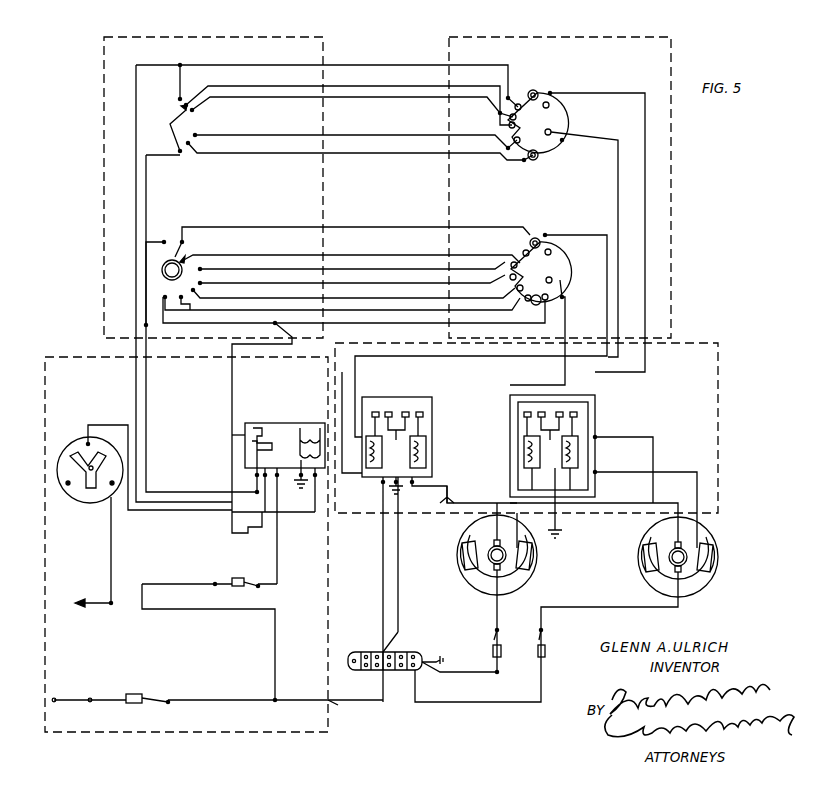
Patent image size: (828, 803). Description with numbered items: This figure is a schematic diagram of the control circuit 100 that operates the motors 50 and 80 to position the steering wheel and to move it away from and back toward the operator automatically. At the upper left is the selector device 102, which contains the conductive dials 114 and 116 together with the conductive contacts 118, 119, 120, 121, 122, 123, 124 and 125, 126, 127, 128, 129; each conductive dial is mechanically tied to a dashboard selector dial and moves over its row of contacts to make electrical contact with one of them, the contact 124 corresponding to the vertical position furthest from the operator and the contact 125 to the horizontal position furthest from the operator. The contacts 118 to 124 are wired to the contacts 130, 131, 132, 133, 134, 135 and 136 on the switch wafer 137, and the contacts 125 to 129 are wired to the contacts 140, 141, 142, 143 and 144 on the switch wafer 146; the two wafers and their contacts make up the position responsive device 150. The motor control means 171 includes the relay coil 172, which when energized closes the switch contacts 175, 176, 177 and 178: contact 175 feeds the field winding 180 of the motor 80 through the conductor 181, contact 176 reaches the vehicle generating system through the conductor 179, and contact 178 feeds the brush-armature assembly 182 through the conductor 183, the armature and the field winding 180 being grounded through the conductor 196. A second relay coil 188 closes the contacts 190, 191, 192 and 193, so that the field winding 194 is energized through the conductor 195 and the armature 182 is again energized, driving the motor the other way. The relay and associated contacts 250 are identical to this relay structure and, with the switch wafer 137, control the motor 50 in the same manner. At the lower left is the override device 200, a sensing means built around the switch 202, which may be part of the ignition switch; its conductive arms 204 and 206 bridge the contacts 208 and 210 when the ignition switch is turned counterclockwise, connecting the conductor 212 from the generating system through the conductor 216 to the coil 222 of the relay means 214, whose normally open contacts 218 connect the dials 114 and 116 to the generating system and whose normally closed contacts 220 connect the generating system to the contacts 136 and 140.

The motor 50 is at (720, 577).
The motor 80 is at (458, 570).
The control circuit 100 is at (503, 705).
The selector device 102 is at (290, 18).
The conductive dial 114 is at (163, 276).
The conductive dial 116 is at (182, 114).
The conductive contact 118 is at (210, 215).
The conductive contact 119 is at (198, 243).
The conductive contact 120 is at (203, 268).
The conductive contact 121 is at (203, 283).
The conductive contact 122 is at (203, 290).
The conductive contact 123 is at (354, 310).
The conductive contact 124 is at (341, 310).
The conductive contact 125 is at (176, 94).
The conductive contact 126 is at (347, 96).
The conductive contact 127 is at (202, 109).
The conductive contact 128 is at (198, 135).
The conductive contact 129 is at (192, 144).
The contact 130 is at (529, 242).
The contact 131 is at (543, 258).
The contact 132 is at (513, 257).
The contact 133 is at (506, 270).
The contact 134 is at (515, 288).
The contact 135 is at (528, 302).
The contact 136 is at (549, 299).
The switch wafer 137 is at (558, 255).
The contact 140 is at (520, 102).
The contact 141 is at (516, 118).
The contact 142 is at (503, 124).
The contact 143 is at (504, 144).
The contact 144 is at (538, 154).
The switch wafer 146 is at (558, 106).
The position responsive device 150 is at (675, 237).
The motor control means 171 is at (718, 474).
The relay coil 172 is at (374, 453).
The switch contact 175 is at (388, 409).
The switch contact 176 is at (371, 410).
The switch contact 177 is at (406, 409).
The switch contact 178 is at (422, 409).
The conductor 179 is at (384, 543).
The field winding 180 is at (464, 555).
The conductor 181 is at (447, 522).
The brush-armature assembly 182 is at (464, 587).
The conductor 183 is at (432, 438).
The relay coil 188 is at (426, 452).
The contact 190 is at (416, 411).
The contact 191 is at (410, 420).
The contact 192 is at (425, 414).
The contact 193 is at (427, 425).
The field winding 194 is at (532, 550).
The conductor 195 is at (552, 522).
The conductor 196 is at (496, 616).
The override device 200 is at (340, 705).
The switch 202 is at (56, 477).
The conductive arm 204 is at (84, 492).
The conductive arm 206 is at (96, 458).
The contact 208 is at (110, 488).
The contact 210 is at (87, 443).
The conductor 212 is at (116, 530).
The relay means 214 is at (244, 433).
The conductor 216 is at (214, 512).
The normally open contacts 218 is at (250, 447).
The normally closed contacts 220 is at (250, 428).
The coil 222 is at (304, 428).
The relay and associated contacts 250 is at (612, 396).